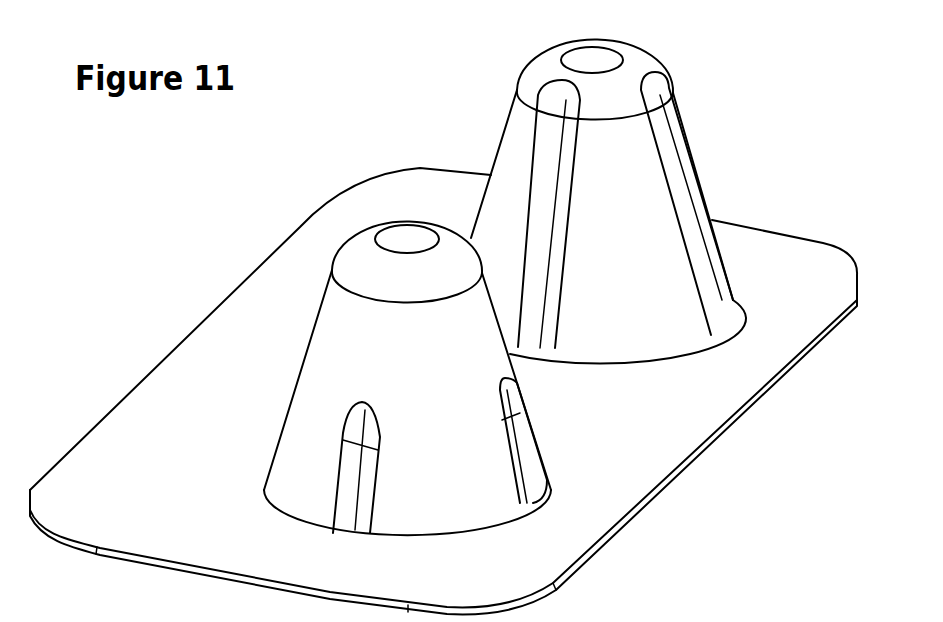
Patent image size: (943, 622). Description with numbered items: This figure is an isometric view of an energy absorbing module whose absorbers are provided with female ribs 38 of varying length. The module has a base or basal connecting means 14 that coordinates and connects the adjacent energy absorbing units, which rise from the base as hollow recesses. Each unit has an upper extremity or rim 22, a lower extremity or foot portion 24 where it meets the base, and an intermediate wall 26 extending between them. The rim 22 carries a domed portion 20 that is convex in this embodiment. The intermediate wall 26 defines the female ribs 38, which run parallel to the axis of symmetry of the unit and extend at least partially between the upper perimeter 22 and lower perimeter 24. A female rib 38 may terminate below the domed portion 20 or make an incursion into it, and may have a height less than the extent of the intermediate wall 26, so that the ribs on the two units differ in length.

The means for coordinating energy absorbing units 14 is at (150, 496).
The domed portion 20 is at (597, 60).
The upper perimeter 22 is at (645, 125).
The lower perimeter 24 is at (647, 360).
The intermediate wall 26 is at (420, 505).
The female rib 38 is at (357, 480).